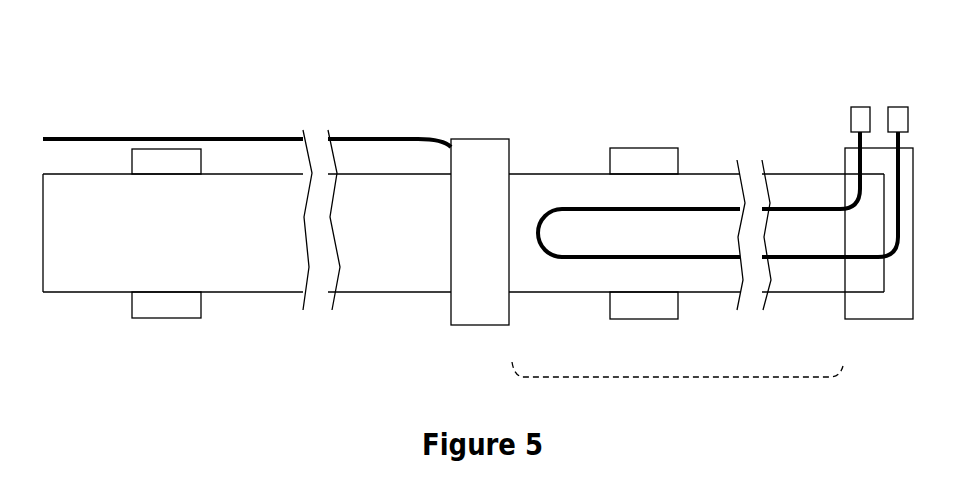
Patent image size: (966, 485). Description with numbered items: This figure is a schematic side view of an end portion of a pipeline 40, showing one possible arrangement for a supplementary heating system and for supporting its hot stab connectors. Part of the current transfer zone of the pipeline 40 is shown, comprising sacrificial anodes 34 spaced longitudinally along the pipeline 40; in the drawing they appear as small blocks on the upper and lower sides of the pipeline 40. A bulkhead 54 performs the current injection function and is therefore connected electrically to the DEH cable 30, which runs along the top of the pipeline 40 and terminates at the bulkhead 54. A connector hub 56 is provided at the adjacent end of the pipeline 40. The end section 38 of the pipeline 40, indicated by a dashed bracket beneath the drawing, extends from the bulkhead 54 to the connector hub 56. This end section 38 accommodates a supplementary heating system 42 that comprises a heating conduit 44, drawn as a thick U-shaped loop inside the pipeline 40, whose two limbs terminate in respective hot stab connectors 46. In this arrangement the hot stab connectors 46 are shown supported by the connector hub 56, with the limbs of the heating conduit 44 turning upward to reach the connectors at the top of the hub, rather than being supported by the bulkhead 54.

The pipeline 40 is at (165, 106).
The DEH cable 30 is at (362, 136).
The bulkhead 54 is at (477, 147).
The sacrificial anodes 34 is at (162, 308).
The heating conduit 44 is at (595, 206).
The supplementary heating system 42 is at (810, 192).
The hot stab connectors 46 is at (858, 107).
The connector hub 56 is at (898, 305).
The end section 38 is at (736, 378).